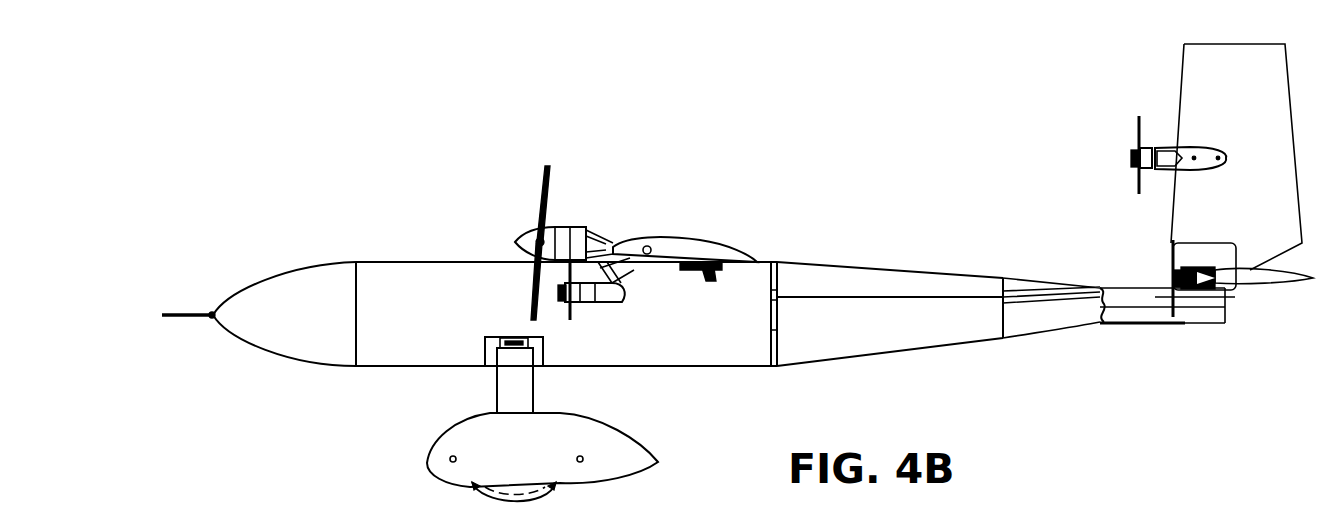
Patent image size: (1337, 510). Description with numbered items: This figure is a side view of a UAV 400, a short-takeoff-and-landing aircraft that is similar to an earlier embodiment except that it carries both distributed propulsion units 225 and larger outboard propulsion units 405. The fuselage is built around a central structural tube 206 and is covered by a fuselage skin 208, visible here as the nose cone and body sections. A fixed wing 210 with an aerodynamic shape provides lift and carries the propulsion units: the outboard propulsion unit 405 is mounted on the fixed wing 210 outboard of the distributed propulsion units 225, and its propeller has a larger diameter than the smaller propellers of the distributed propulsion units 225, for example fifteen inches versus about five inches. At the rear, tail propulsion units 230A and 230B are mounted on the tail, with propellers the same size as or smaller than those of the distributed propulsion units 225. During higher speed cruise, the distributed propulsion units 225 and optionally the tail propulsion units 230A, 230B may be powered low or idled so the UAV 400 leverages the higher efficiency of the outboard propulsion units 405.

The UAV 400 is at (318, 144).
The fuselage skin 208 is at (313, 328).
The outboard propulsion unit 405 is at (492, 226).
The fixed wing 210 is at (709, 230).
The distributed propulsion unit 225 is at (612, 318).
The tail propulsion unit 230A is at (1142, 272).
The tail propulsion unit 230B is at (1105, 146).
The central structural tube 206 is at (1115, 313).